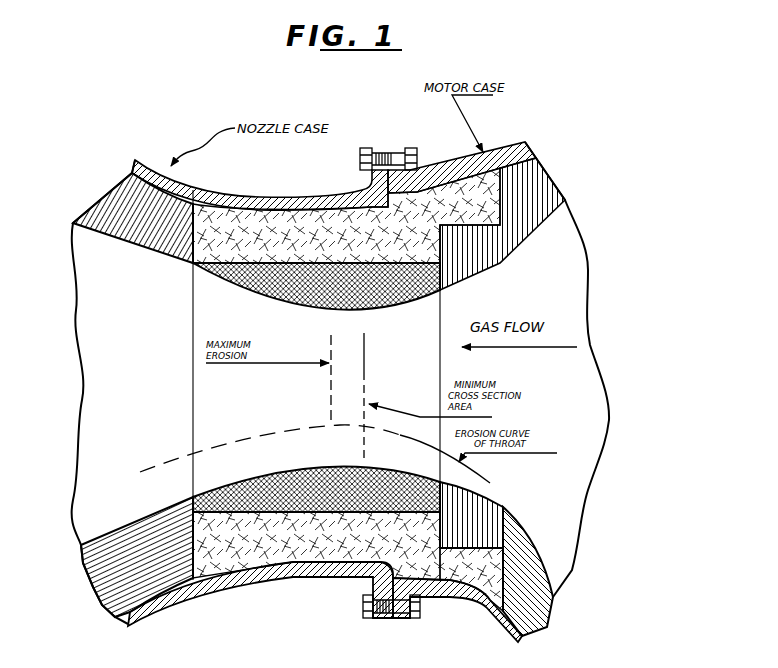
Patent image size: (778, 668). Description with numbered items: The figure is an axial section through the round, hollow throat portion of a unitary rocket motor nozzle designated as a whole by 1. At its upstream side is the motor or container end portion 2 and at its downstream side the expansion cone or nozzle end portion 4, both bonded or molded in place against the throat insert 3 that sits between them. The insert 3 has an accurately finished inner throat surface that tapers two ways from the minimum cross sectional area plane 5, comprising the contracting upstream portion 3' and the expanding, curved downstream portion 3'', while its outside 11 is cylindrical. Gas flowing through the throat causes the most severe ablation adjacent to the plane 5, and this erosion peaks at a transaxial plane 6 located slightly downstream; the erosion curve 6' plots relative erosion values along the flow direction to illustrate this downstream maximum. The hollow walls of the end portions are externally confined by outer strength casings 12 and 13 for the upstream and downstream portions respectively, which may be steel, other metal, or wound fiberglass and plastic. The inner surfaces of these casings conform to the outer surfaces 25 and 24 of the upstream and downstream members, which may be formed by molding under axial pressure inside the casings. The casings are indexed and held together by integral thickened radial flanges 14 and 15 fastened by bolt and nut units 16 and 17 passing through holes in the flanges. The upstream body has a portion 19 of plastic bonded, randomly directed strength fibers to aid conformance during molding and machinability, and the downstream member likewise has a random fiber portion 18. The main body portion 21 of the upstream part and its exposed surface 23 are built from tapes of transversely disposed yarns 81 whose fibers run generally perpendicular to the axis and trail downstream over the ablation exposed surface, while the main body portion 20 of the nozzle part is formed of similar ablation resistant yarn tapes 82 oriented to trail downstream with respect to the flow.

The rocket motor nozzle portion 1 is at (120, 526).
The inner axial end portion 2 is at (515, 511).
The throat insert 3 is at (316, 387).
The contracting upstream portion 3' is at (405, 457).
The expanding downstream portion 3'' is at (179, 486).
The outer axial end portion 4 is at (158, 510).
The minimum cross sectional area plane 5 is at (365, 363).
The transaxial plane of maximum erosion 6 is at (268, 377).
The erosion curve 6' is at (315, 444).
The outside surface of insert 11 is at (305, 256).
The outer strength casing 12 is at (501, 632).
The outer strength casing 13 is at (205, 599).
The flange 14 is at (397, 619).
The flange 15 is at (360, 588).
The bolt 16 is at (363, 613).
The nut 17 is at (413, 614).
The random fiber portion of downstream member 18 is at (278, 580).
The random fiber portion of upstream body 19 is at (460, 596).
The main body portion of nozzle part 20 is at (82, 563).
The main body portion of motor case part 21 is at (562, 580).
The exposed surface 23 is at (531, 545).
The outer surface of downstream member 24 is at (127, 622).
The outer surface of upstream member 25 is at (530, 637).
The transversely disposed yarn tapes 81 is at (531, 527).
The ablation resistant yarn tapes 82 is at (133, 252).